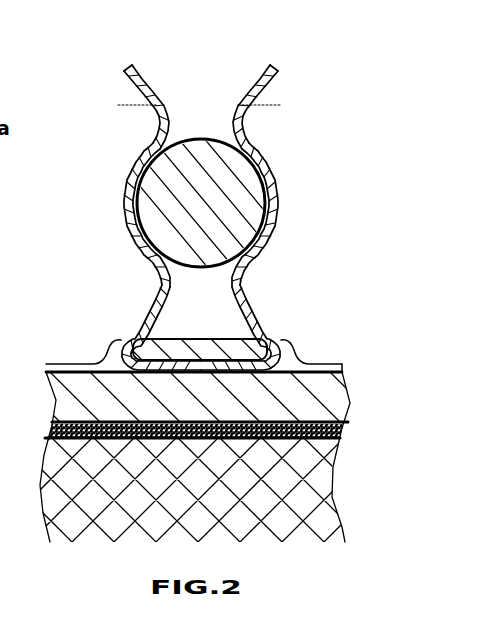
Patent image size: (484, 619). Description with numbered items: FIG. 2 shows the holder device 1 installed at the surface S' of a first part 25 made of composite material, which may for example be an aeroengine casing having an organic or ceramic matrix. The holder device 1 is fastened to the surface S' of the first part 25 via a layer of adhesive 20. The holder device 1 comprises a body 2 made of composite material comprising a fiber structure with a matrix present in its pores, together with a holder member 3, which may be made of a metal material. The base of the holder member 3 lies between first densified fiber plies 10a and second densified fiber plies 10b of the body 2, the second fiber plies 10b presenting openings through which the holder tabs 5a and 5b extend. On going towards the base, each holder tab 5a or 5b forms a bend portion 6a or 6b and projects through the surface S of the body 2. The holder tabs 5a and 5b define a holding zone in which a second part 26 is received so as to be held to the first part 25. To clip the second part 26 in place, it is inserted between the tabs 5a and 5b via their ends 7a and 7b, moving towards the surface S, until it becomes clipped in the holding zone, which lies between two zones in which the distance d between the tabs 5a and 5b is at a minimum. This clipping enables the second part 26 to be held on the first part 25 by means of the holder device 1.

The holder device 1 is at (318, 100).
The body 2 is at (33, 387).
The holder member 3 is at (275, 68).
The holder tab 5a is at (143, 82).
The holder tab 5b is at (262, 82).
The bend portion 6a is at (131, 351).
The bend portion 6b is at (278, 350).
The end of holder tab 7a is at (127, 66).
The end of holder tab 7b is at (268, 63).
The first densified fiber plies 10a is at (340, 393).
The second densified fiber plies 10b is at (327, 365).
The layer of adhesive 20 is at (343, 430).
The first part 25 is at (325, 480).
The second part 26 is at (148, 208).
The surface of the body S is at (206, 333).
The surface of the first part S' is at (35, 445).
The distance between the tabs d is at (126, 129).